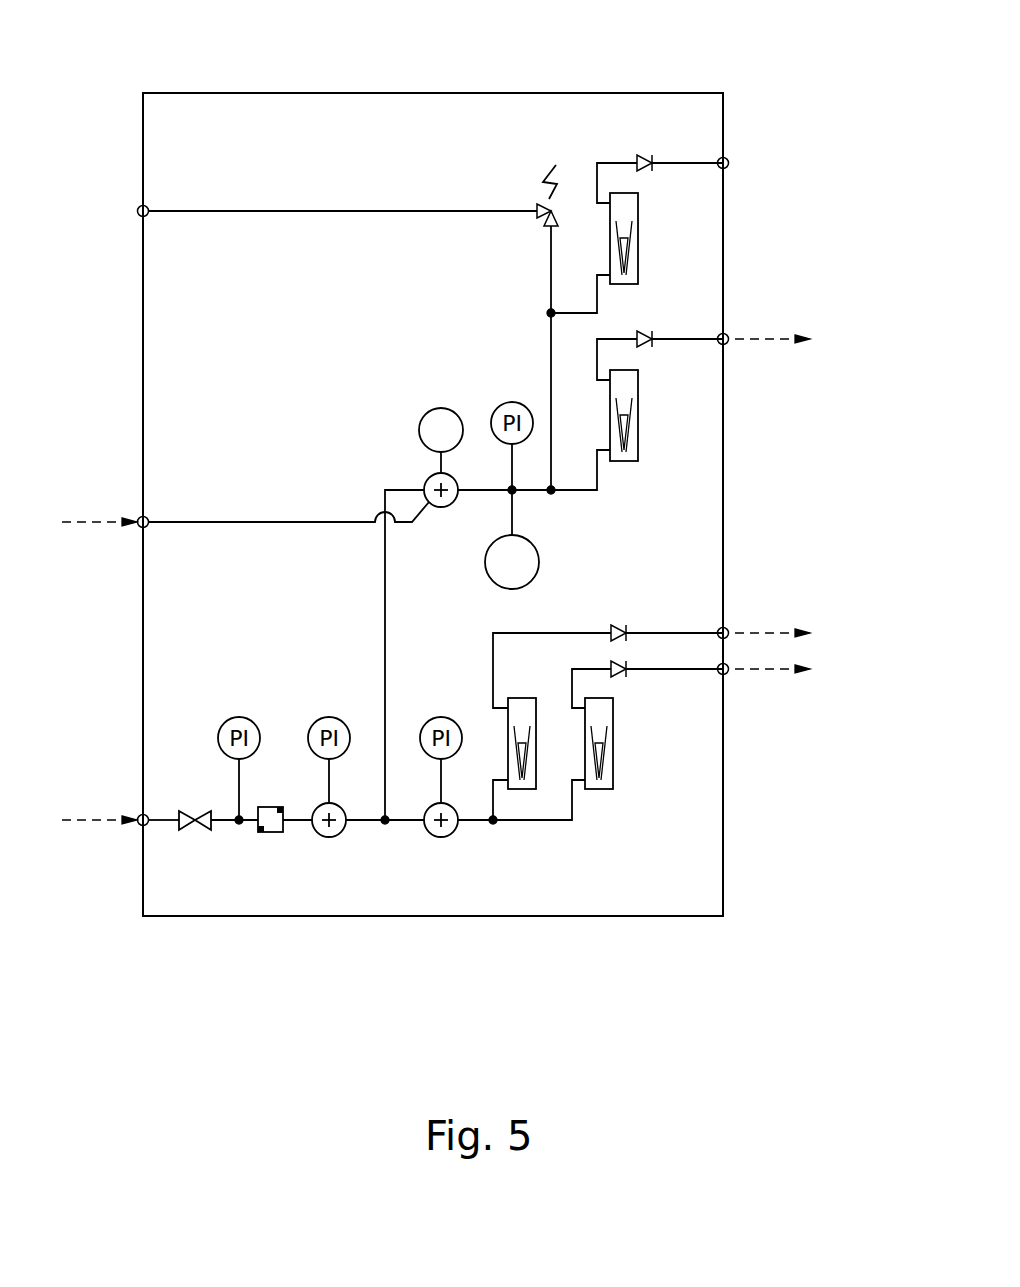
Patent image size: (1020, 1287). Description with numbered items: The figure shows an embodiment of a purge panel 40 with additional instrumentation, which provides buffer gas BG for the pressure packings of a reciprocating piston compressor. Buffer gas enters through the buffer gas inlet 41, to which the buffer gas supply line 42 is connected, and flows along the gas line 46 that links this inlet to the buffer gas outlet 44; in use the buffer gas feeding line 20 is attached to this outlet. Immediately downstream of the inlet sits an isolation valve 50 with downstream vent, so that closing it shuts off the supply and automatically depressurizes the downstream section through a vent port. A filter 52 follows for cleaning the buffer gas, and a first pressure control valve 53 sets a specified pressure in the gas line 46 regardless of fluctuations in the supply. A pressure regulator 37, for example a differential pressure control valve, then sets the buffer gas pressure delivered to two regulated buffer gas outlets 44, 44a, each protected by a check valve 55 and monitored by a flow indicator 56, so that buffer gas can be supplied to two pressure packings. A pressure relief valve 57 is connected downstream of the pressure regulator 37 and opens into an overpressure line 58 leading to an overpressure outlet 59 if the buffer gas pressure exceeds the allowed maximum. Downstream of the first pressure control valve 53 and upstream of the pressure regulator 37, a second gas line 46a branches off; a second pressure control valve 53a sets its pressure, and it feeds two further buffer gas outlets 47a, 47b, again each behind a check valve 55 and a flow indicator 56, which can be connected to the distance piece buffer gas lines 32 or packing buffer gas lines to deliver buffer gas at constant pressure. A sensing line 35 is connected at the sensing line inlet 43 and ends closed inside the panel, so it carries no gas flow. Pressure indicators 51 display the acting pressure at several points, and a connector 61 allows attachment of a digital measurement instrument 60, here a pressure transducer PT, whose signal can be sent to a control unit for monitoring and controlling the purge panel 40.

The buffer gas feeding line 20 is at (762, 341).
The distance piece buffer gas line 32 is at (839, 651).
The sensing line 35 is at (80, 520).
The pressure regulator 37 is at (420, 423).
The purge panel 40 is at (343, 93).
The buffer gas inlet 41 is at (140, 830).
The buffer gas supply line 42 is at (80, 815).
The sensing line inlet 43 is at (140, 530).
The buffer gas outlet 44 is at (727, 345).
The buffer gas outlet 44a is at (730, 158).
The gas line 46 is at (383, 626).
The second gas line 46a is at (405, 822).
The buffer gas outlet 47a is at (731, 674).
The buffer gas outlet 47b is at (732, 627).
The isolation valve 50 is at (203, 833).
The pressure indicator 51 is at (500, 406).
The filter 52 is at (272, 833).
The first pressure control valve 53 is at (337, 838).
The second pressure control valve 53a is at (452, 838).
The check valve 55 is at (645, 160).
The flow indicator 56 is at (638, 255).
The pressure relief valve 57 is at (545, 206).
The overpressure line 58 is at (244, 211).
The overpressure outlet 59 is at (136, 218).
The digital measurement instrument 60 is at (487, 571).
The connector 61 is at (517, 492).